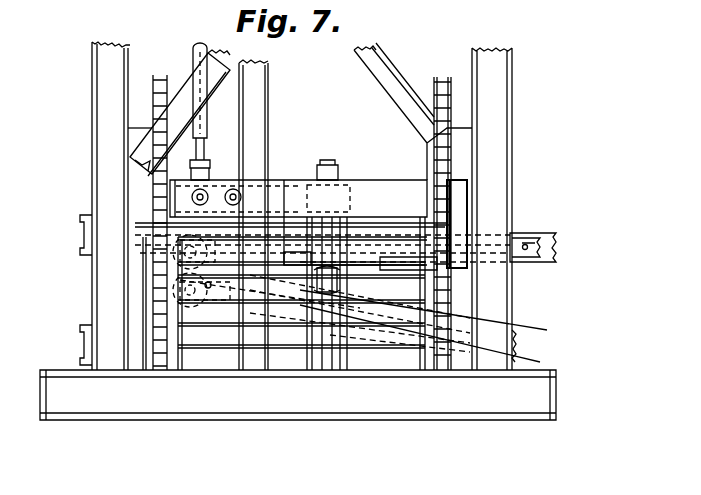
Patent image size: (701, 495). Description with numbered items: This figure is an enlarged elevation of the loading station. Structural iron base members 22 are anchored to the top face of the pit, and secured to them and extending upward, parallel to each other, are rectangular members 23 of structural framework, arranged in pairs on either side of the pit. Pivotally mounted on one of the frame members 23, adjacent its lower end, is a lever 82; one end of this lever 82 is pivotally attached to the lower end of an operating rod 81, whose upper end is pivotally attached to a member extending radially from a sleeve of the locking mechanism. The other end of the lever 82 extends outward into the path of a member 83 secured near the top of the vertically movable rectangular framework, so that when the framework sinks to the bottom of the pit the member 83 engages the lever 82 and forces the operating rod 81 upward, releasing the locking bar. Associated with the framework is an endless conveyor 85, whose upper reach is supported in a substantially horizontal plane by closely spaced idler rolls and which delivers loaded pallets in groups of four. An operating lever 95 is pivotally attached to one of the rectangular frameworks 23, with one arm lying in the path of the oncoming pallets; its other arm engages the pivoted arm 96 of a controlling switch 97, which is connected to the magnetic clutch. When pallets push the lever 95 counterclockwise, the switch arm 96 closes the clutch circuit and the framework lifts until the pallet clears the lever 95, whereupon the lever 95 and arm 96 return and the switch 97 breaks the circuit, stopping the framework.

The structural iron base member 22 is at (412, 407).
The rectangular member 23 is at (495, 138).
The operating rod 81 is at (207, 143).
The lever 82 is at (267, 165).
The member 83 is at (333, 192).
The endless conveyor 85 is at (556, 235).
The operating lever 95 is at (143, 227).
The pivoted arm 96 is at (203, 315).
The controlling switch 97 is at (225, 305).